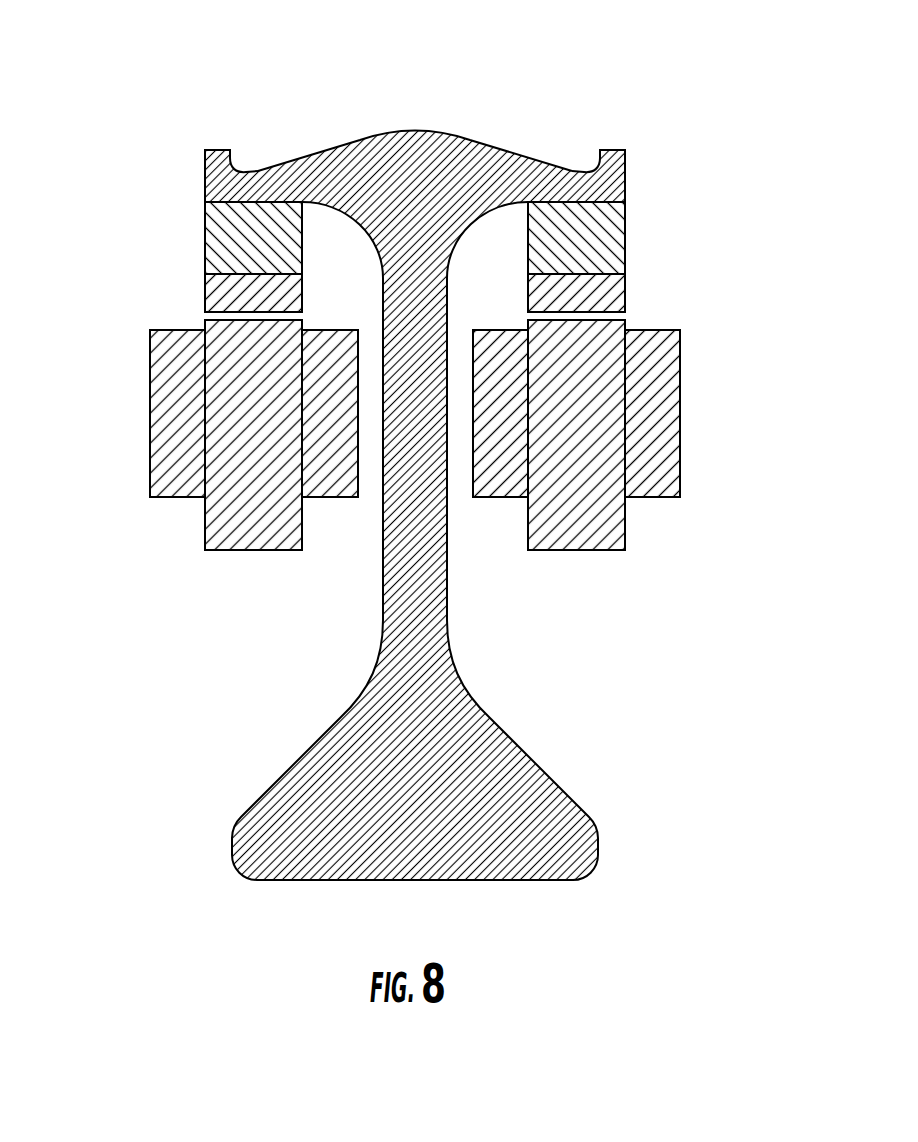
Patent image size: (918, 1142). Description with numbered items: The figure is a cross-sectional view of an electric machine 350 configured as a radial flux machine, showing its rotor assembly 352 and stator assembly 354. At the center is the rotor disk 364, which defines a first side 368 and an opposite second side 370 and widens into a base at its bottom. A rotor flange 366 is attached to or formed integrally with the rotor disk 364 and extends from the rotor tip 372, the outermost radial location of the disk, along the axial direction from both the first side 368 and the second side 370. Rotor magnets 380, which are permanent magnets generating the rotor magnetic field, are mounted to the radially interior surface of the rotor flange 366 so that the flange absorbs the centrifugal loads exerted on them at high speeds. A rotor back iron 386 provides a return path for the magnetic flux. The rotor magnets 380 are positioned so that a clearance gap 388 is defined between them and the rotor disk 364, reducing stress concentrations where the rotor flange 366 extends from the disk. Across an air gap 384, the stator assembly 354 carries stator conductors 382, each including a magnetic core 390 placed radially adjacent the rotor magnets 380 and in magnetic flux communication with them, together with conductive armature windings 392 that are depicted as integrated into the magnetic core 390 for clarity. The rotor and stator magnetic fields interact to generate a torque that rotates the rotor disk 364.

The electric machine 350 is at (160, 80).
The rotor assembly 352 is at (604, 110).
The stator assembly 354 is at (138, 412).
The rotor disk 364 is at (422, 552).
The rotor flange 366 is at (285, 170).
The first side 368 is at (372, 556).
The second side 370 is at (458, 620).
The rotor tip 372 is at (462, 125).
The rotor magnets 380 is at (217, 285).
The stator conductors 382 is at (140, 365).
The air gap 384 is at (195, 311).
The rotor back iron 386 is at (227, 222).
The clearance gap 388 is at (333, 228).
The magnetic core 390 is at (220, 507).
The armature windings 392 is at (168, 437).